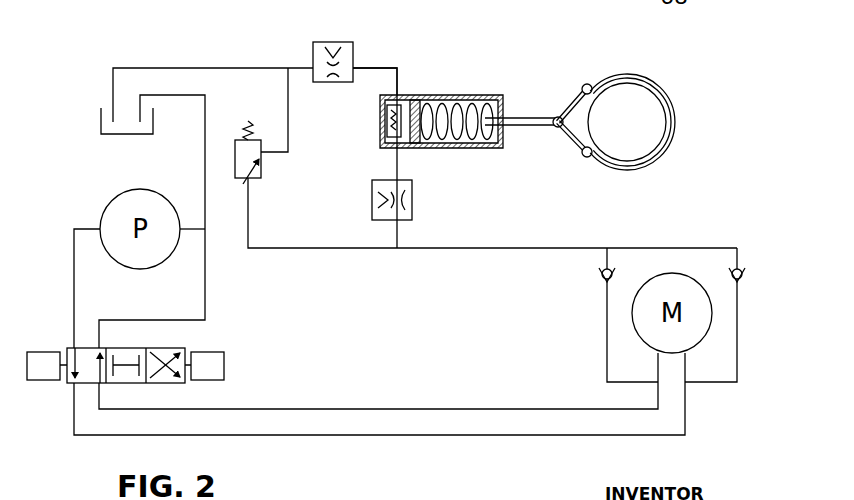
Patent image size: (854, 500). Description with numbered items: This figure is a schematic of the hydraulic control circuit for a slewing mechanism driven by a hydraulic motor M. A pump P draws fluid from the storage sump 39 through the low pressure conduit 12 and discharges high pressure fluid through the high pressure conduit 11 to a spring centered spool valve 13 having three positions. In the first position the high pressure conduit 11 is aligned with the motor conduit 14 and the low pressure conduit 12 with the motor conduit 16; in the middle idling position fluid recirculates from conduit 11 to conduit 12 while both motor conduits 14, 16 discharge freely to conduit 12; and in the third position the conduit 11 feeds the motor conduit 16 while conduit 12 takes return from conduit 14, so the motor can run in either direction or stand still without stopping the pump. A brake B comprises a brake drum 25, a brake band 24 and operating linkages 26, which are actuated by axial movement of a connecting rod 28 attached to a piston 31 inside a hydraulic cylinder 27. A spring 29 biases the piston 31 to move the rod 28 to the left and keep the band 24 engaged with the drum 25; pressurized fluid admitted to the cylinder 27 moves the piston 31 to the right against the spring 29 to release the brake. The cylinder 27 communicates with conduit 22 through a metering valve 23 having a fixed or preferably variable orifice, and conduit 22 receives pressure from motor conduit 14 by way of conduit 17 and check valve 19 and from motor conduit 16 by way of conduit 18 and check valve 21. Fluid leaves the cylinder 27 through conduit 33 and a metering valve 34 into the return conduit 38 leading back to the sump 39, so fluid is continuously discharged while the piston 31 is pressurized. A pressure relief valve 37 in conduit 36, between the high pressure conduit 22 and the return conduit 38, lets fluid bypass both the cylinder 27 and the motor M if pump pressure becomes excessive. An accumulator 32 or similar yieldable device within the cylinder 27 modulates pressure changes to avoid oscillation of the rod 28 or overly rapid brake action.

The high pressure conduit 11 is at (74, 298).
The low pressure conduit 12 is at (204, 157).
The spring centered spool valve 13 is at (182, 348).
The motor conduit 14 is at (408, 436).
The motor conduit 16 is at (395, 409).
The conduit 17 is at (737, 327).
The conduit 18 is at (607, 335).
The check valve 19 is at (742, 266).
The check valve 21 is at (600, 272).
The conduit 22 is at (502, 247).
The metering valve 23 is at (412, 202).
The brake band 24 is at (657, 87).
The brake drum 25 is at (648, 118).
The operating linkages 26 is at (571, 105).
The hydraulic cylinder 27 is at (420, 100).
The connecting rod 28 is at (526, 118).
The spring 29 is at (472, 138).
The piston 31 is at (413, 137).
The accumulator 32 is at (387, 118).
The conduit 33 is at (390, 68).
The metering valve 34 is at (337, 42).
The conduit 36 is at (263, 248).
The pressure relief valve 37 is at (262, 171).
The return conduit 38 is at (183, 68).
The storage sump 39 is at (100, 122).